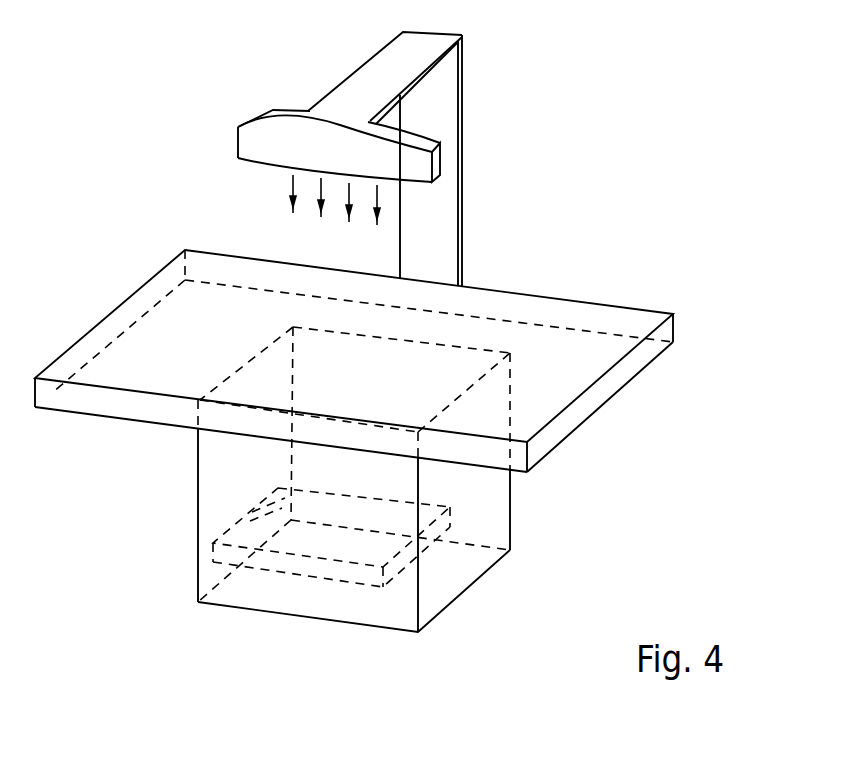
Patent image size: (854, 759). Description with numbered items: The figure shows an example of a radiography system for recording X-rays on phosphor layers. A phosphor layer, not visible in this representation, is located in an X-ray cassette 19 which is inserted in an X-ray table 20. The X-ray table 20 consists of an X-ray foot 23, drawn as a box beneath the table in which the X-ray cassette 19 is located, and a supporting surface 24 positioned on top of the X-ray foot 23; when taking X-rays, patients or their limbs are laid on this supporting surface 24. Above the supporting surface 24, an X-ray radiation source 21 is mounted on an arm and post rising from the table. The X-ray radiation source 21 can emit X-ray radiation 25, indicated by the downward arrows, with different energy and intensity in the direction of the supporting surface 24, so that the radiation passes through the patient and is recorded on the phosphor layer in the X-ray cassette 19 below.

The X-ray cassette 19 is at (348, 573).
The X-ray table 20 is at (354, 354).
The X-ray radiation source 21 is at (246, 143).
The X-ray foot 23 is at (463, 582).
The supporting surface 24 is at (588, 410).
The X-ray radiation 25 is at (268, 209).